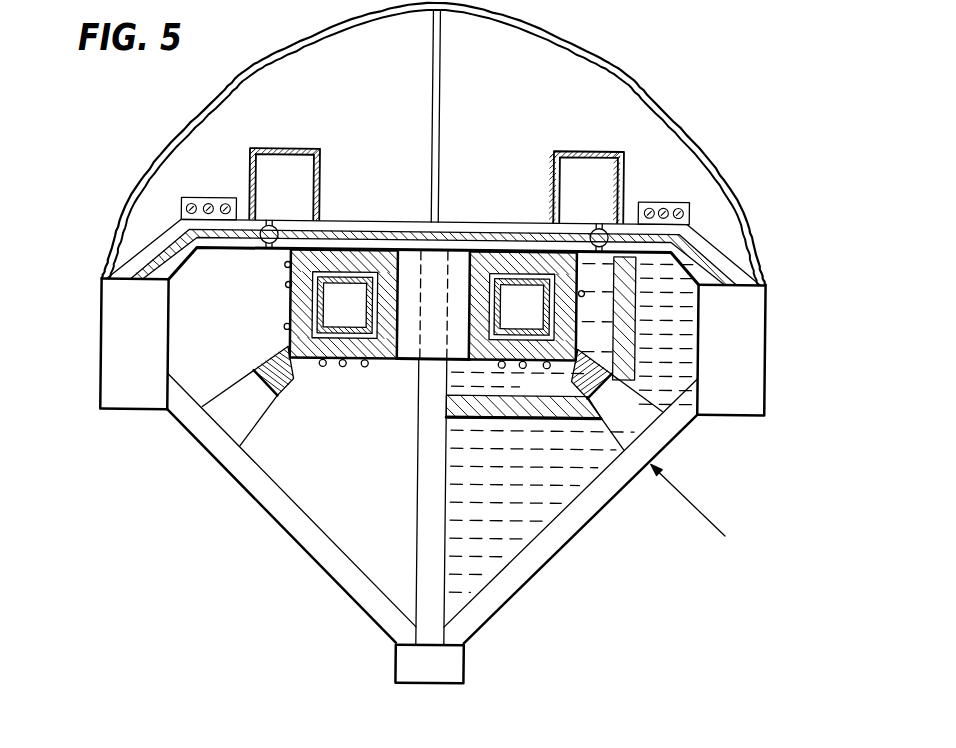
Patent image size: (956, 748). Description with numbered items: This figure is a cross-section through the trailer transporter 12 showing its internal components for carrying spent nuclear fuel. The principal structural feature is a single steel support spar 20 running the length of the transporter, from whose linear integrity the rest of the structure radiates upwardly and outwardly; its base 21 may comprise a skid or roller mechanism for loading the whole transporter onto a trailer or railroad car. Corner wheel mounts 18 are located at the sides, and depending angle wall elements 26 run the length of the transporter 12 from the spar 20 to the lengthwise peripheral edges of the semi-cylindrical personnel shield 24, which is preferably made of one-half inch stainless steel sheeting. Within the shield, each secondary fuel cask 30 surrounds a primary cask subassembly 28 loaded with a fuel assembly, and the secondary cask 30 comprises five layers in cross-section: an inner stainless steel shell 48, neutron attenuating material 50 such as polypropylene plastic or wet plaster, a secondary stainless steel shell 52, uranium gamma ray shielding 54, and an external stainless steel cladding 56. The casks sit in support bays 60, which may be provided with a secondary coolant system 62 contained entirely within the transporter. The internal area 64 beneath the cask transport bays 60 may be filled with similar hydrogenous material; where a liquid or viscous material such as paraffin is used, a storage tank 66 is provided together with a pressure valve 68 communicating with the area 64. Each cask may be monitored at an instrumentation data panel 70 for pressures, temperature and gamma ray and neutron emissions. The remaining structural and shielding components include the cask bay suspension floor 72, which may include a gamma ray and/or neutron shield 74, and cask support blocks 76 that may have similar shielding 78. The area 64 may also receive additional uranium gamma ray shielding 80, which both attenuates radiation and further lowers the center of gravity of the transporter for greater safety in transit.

The trailer transporter 12 is at (701, 508).
The corner wheel mount 18 is at (101, 326).
The support spar 20 is at (418, 518).
The base 21 is at (467, 660).
The personnel shield 24 is at (643, 72).
The angle wall element 26 is at (283, 527).
The primary cask subassembly 28 is at (433, 306).
The secondary fuel cask 30 is at (366, 368).
The inner stainless steel shell 48 is at (284, 266).
The neutron attenuating material 50 is at (290, 291).
The secondary stainless steel shell 52 is at (312, 300).
The uranium gamma ray shielding 54 is at (303, 318).
The external stainless steel cladding 56 is at (290, 341).
The support bay 60 is at (472, 332).
The secondary coolant system 62 is at (343, 368).
The internal area 64 is at (330, 480).
The storage tank 66 is at (304, 150).
The pressure valve 68 is at (268, 226).
The instrumentation data panel 70 is at (216, 200).
The cask bay suspension floor 72 is at (440, 222).
The gamma ray and/or neutron shield 74 is at (413, 232).
The cask support block 76 is at (223, 413).
The shielding 78 is at (262, 367).
The gamma ray shielding 80 is at (636, 318).